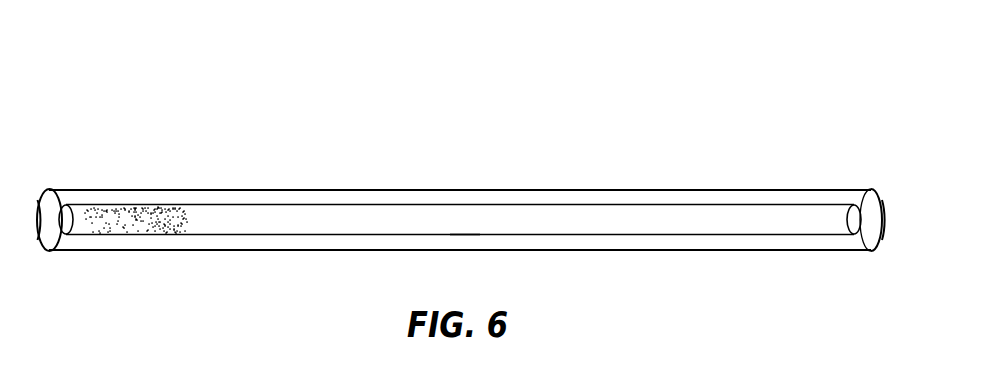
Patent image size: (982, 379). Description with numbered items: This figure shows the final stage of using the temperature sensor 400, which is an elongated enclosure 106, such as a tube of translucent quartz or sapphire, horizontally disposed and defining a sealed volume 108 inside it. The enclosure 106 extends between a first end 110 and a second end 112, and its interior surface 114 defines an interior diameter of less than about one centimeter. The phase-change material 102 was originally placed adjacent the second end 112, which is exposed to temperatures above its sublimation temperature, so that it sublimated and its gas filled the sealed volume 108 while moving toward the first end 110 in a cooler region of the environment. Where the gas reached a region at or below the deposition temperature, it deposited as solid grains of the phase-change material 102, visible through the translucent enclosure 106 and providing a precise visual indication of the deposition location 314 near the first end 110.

The temperature sensor 400 is at (718, 76).
The enclosure 106 is at (707, 197).
The sealed volume 108 is at (590, 216).
The first end 110 is at (47, 176).
The second end 112 is at (869, 175).
The interior surface 114 is at (469, 228).
The deposition location 314 is at (188, 176).
The phase-change material 102 is at (165, 235).